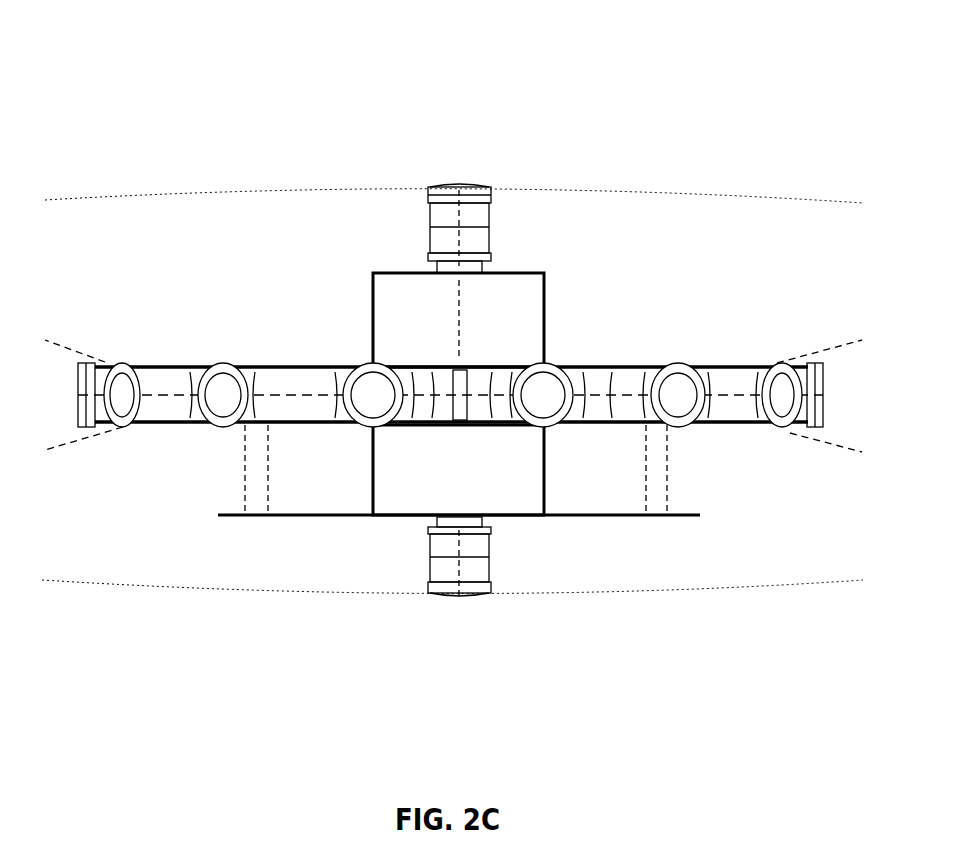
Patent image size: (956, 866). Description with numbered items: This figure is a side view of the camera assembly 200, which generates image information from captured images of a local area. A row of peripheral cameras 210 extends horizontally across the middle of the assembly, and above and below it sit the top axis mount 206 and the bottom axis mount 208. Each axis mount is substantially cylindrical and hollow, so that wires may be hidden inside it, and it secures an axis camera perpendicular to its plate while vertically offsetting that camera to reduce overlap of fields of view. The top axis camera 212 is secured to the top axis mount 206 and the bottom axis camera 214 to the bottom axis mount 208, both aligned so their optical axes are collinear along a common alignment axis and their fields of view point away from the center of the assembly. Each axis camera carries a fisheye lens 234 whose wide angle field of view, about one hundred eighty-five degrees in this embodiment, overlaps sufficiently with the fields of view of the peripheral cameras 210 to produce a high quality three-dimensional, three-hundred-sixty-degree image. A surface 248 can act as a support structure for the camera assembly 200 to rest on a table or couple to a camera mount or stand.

The camera assembly 200 is at (197, 31).
The top axis mount 206 is at (545, 283).
The bottom axis mount 208 is at (373, 485).
The peripheral camera 210 is at (450, 403).
The top axis camera 212 is at (414, 187).
The bottom axis camera 214 is at (505, 557).
The lens 234 is at (810, 354).
The surface 248 is at (680, 520).